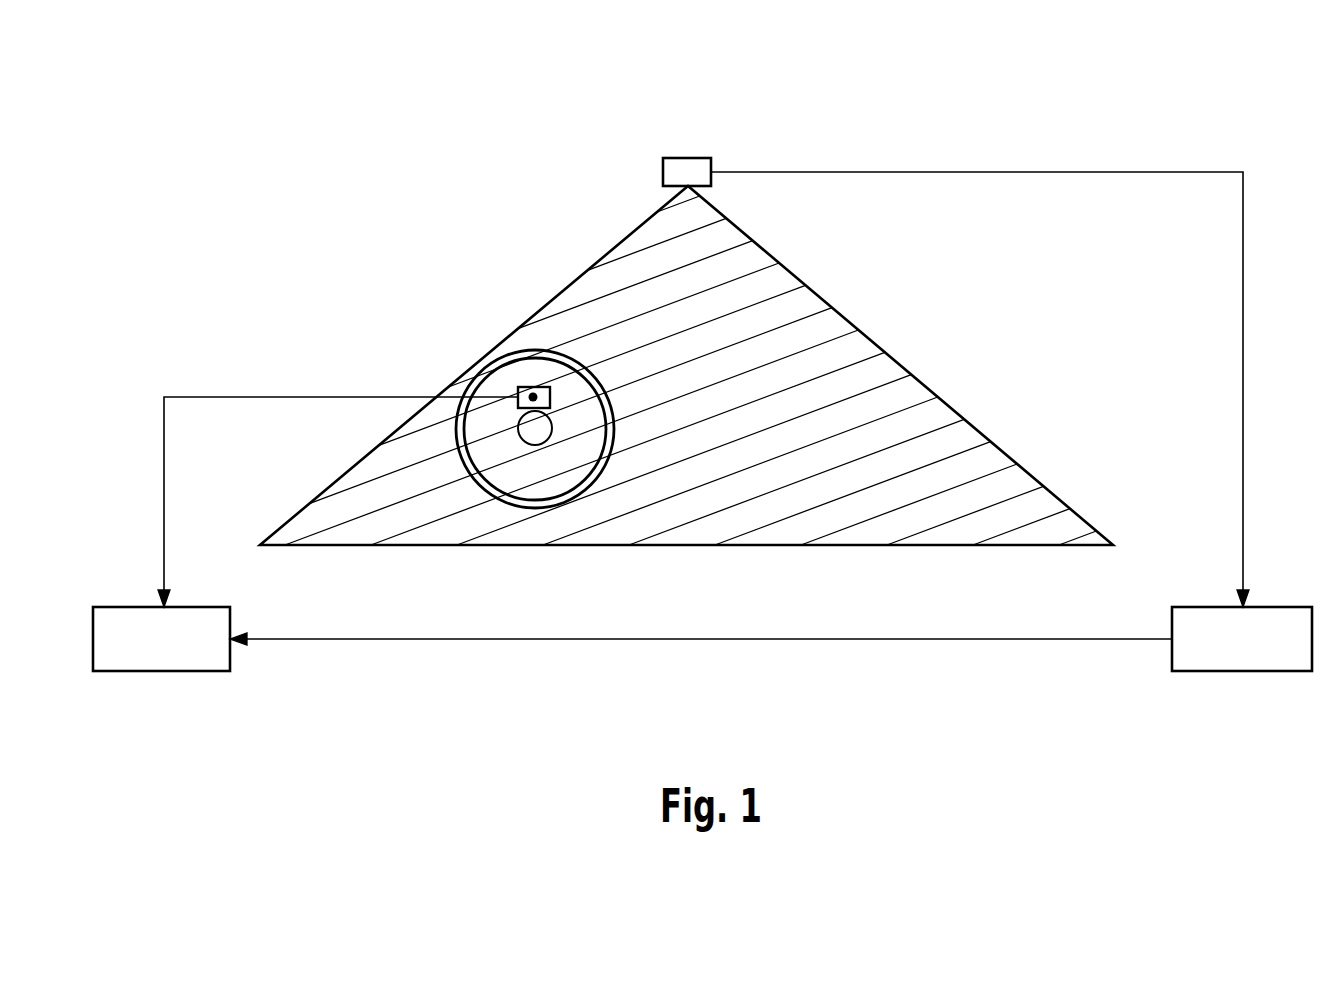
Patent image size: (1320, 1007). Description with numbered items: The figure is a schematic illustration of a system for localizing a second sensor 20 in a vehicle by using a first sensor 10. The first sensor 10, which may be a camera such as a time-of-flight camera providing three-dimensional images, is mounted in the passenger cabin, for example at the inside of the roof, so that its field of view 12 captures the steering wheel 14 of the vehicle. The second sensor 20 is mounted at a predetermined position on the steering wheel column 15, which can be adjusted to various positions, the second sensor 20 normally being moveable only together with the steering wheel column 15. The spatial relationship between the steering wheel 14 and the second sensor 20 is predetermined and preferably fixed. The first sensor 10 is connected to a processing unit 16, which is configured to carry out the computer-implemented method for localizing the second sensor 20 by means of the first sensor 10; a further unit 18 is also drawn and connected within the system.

The first sensor 10 is at (687, 178).
The field of view 12 is at (958, 412).
The steering wheel 14 is at (465, 461).
The steering wheel column 15 is at (538, 435).
The processing unit 16 is at (1233, 661).
The evaluation unit 18 is at (170, 658).
The second sensor 20 is at (530, 387).